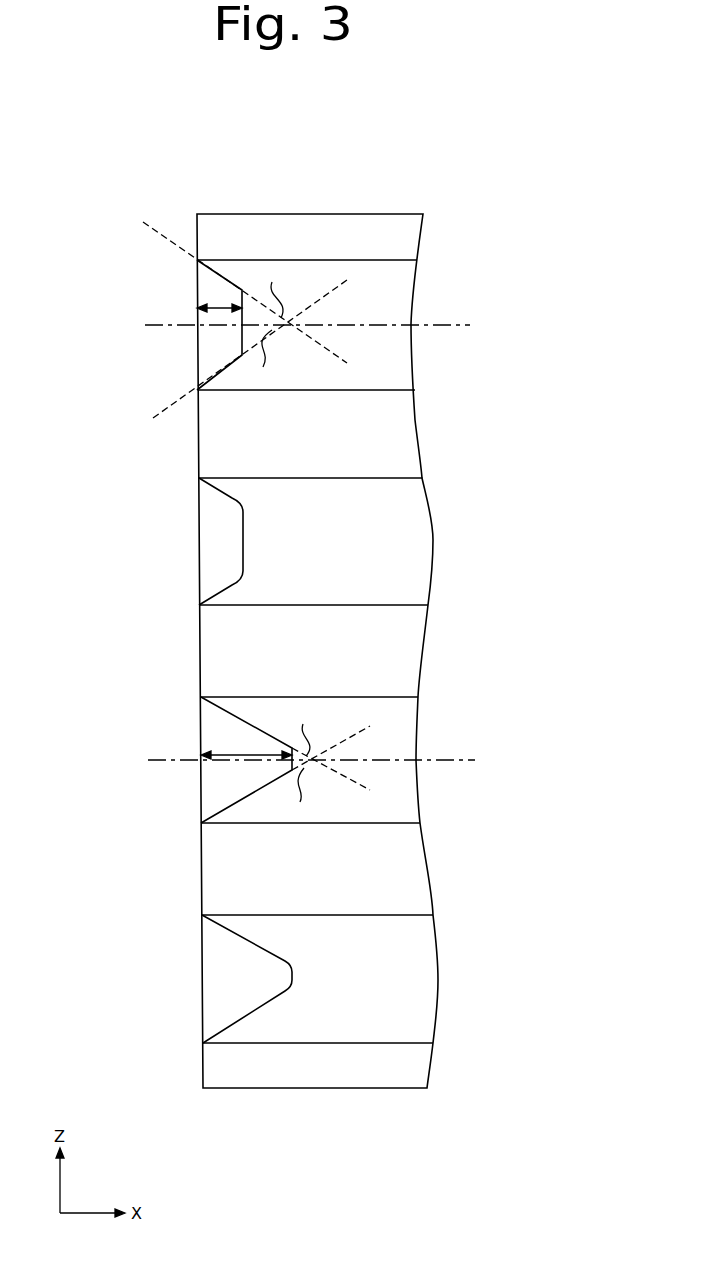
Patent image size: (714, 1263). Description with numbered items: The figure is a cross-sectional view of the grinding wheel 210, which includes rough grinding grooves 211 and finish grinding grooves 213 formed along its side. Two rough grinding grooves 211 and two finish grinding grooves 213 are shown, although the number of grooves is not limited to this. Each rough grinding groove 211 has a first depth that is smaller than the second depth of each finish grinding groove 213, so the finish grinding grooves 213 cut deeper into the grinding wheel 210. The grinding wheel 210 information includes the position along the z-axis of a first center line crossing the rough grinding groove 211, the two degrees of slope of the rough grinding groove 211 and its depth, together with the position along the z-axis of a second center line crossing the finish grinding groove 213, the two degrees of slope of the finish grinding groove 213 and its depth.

The grinding wheel 210 is at (578, 156).
The rough grinding groove 211 is at (127, 260).
The finish grinding groove 213 is at (128, 697).